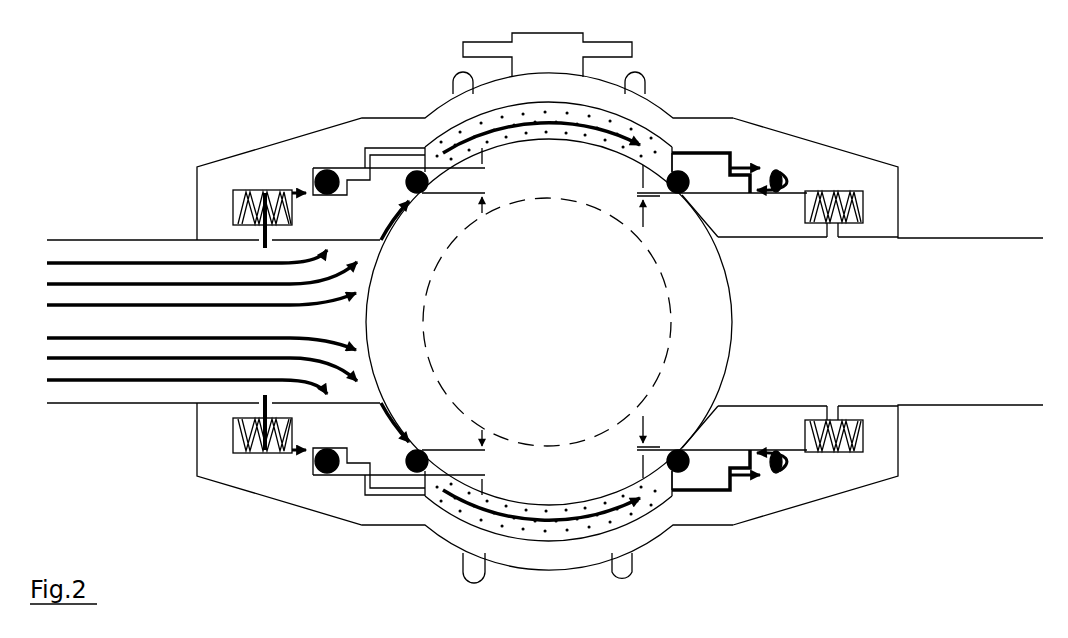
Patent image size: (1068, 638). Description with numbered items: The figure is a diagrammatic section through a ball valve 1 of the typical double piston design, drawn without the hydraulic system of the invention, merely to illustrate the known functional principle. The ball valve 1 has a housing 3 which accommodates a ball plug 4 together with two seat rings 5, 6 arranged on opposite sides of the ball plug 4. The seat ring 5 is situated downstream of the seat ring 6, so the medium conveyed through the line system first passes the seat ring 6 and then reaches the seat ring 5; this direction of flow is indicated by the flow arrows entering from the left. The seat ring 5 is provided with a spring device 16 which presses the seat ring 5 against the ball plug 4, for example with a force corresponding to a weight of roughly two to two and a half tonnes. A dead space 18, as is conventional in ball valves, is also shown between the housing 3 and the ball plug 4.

The ball valve 1 is at (430, 95).
The housing 3 is at (748, 143).
The ball plug 4 is at (623, 188).
The seat ring 5 is at (780, 208).
The seat ring 6 is at (373, 205).
The spring device 16 is at (863, 204).
The dead space 18 is at (570, 105).